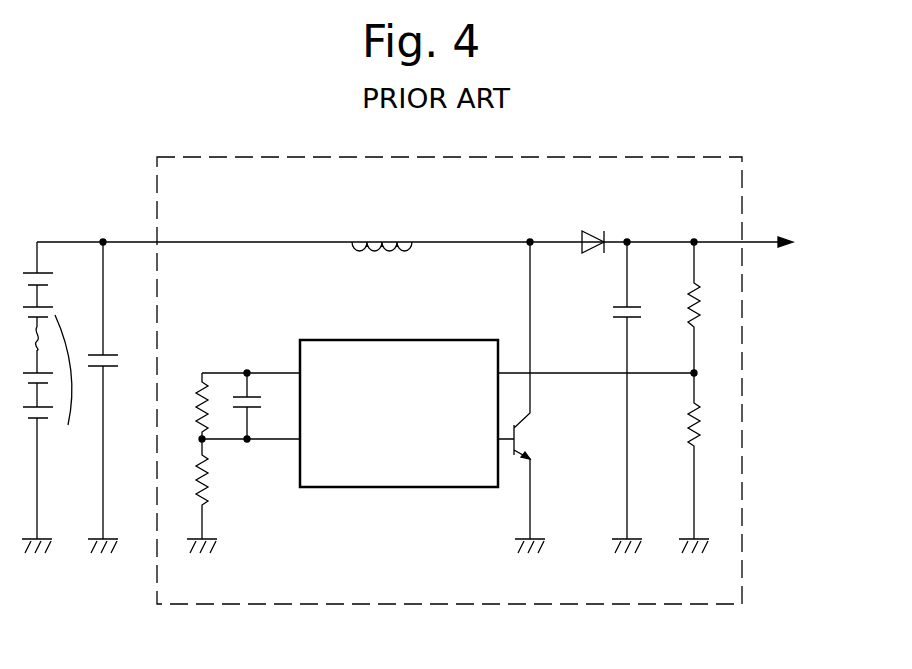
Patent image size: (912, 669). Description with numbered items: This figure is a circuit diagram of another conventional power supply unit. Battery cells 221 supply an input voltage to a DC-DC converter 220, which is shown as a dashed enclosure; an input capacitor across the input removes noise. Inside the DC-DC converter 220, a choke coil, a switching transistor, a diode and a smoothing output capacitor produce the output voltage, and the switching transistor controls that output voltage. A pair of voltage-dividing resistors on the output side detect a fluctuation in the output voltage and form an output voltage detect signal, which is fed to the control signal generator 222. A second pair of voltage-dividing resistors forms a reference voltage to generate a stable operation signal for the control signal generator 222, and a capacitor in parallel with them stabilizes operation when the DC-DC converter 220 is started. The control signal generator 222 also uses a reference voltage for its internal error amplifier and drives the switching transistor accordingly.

The DC-DC converter 220 is at (230, 157).
The battery cells 221 is at (59, 397).
The control signal generator 222 is at (387, 340).